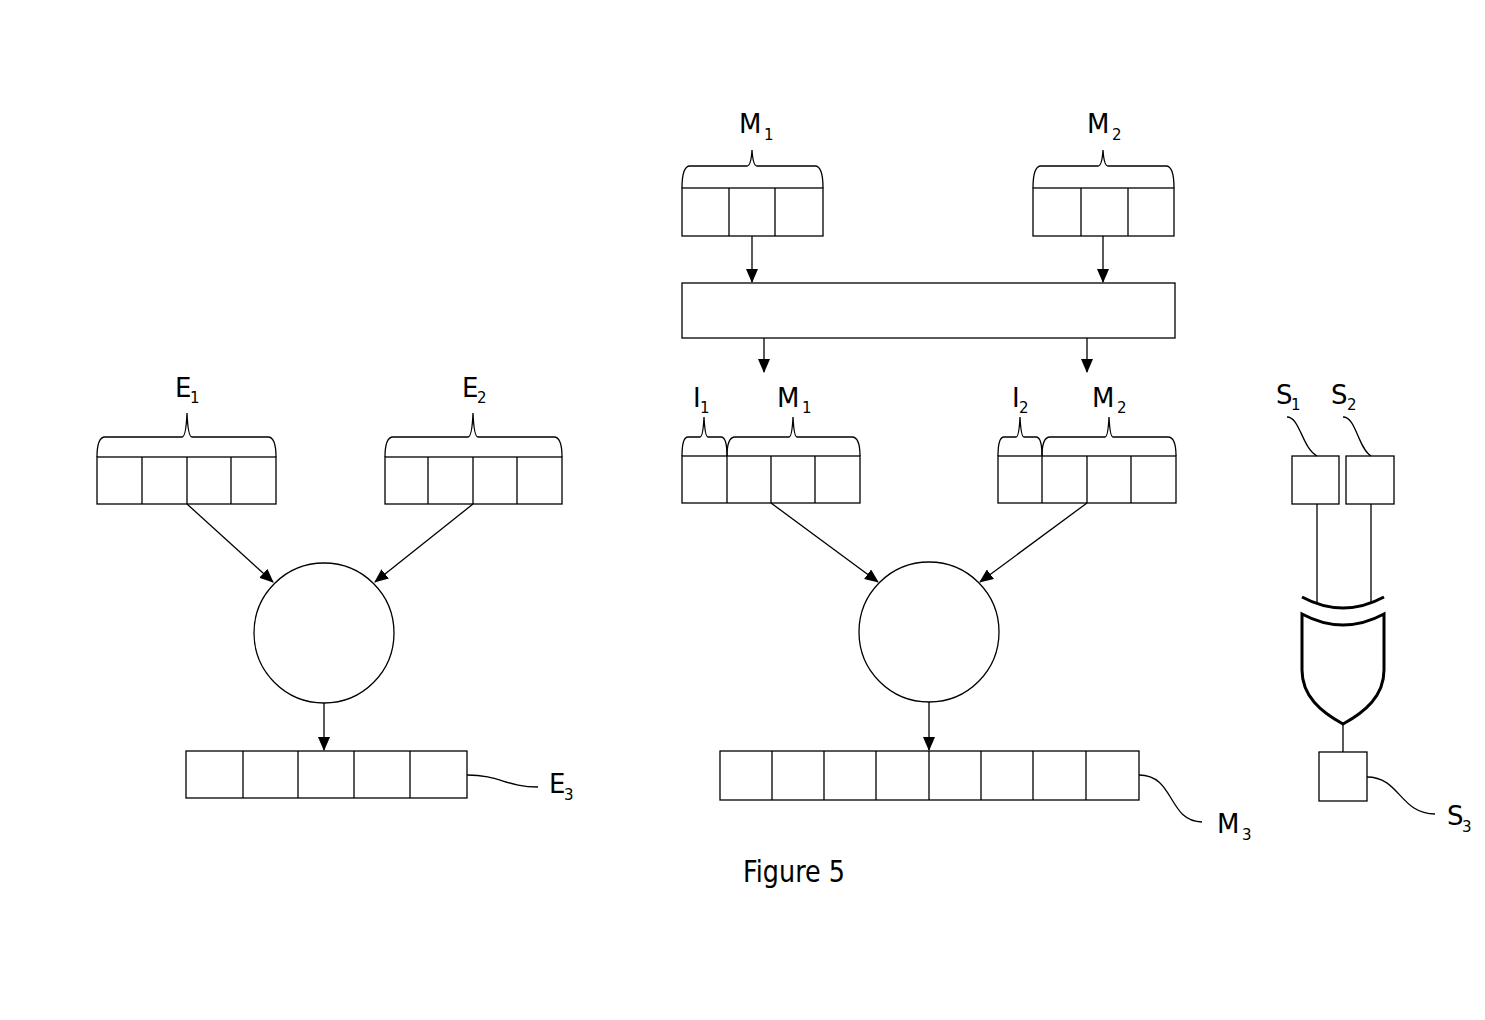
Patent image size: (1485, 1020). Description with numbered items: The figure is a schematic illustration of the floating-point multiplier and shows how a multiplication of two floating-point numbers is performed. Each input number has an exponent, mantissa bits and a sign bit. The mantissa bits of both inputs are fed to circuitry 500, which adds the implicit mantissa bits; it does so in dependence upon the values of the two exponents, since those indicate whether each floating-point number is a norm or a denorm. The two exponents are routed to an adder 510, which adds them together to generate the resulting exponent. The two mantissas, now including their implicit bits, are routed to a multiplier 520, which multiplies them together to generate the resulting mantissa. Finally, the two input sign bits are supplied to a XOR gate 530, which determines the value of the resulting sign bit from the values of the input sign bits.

The circuitry 500 is at (1175, 310).
The adder 510 is at (394, 633).
The multiplier 520 is at (999, 632).
The XOR gate 530 is at (1384, 655).